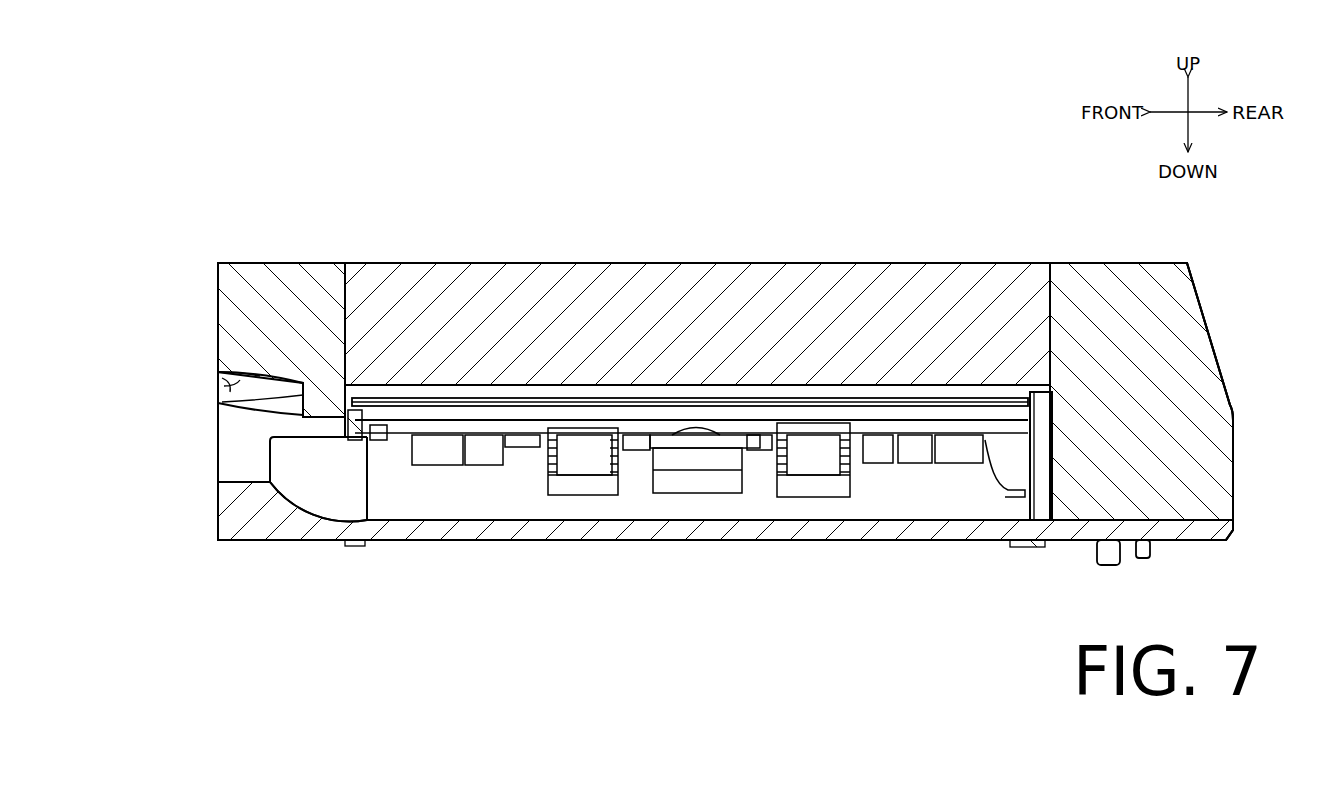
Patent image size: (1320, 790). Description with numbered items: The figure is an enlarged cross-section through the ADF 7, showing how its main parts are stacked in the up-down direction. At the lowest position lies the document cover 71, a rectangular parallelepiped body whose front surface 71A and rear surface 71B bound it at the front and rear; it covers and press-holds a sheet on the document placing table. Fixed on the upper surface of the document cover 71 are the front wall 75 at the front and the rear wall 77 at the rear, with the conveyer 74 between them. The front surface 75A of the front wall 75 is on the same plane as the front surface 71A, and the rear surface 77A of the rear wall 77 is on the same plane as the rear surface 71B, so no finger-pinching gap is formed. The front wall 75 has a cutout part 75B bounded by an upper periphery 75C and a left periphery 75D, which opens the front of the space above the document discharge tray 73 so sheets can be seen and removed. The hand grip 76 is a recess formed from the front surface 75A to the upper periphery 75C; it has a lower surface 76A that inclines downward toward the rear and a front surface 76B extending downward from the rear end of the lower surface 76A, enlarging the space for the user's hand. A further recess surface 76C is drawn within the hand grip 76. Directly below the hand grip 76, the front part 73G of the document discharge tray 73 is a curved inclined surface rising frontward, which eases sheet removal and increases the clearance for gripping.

The ADF 7 is at (205, 243).
The document cover 71 is at (215, 545).
The front surface 71A is at (218, 528).
The rear surface 71B is at (1233, 530).
The document discharge tray 73 is at (420, 513).
The front part 73G is at (305, 497).
The conveyer 74 is at (683, 262).
The front wall 75 is at (270, 262).
The front surface 75A is at (218, 264).
The cutout part 75B is at (323, 418).
The upper periphery 75C is at (250, 486).
The left periphery 75D is at (240, 462).
The hand grip 76 is at (245, 420).
The lower surface 76A is at (228, 378).
The front surface 76B is at (250, 404).
The lip of seal 76C is at (245, 390).
The rear wall 77 is at (1115, 262).
The rear surface 77A is at (1233, 450).